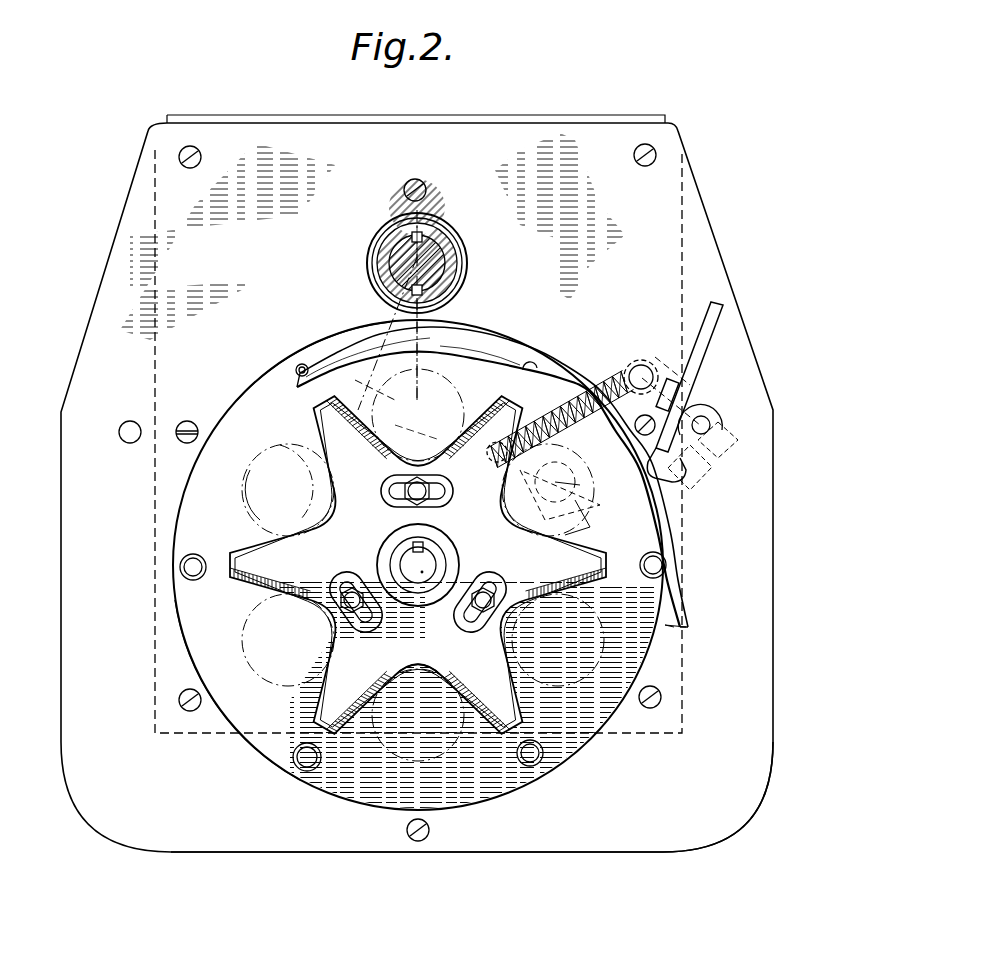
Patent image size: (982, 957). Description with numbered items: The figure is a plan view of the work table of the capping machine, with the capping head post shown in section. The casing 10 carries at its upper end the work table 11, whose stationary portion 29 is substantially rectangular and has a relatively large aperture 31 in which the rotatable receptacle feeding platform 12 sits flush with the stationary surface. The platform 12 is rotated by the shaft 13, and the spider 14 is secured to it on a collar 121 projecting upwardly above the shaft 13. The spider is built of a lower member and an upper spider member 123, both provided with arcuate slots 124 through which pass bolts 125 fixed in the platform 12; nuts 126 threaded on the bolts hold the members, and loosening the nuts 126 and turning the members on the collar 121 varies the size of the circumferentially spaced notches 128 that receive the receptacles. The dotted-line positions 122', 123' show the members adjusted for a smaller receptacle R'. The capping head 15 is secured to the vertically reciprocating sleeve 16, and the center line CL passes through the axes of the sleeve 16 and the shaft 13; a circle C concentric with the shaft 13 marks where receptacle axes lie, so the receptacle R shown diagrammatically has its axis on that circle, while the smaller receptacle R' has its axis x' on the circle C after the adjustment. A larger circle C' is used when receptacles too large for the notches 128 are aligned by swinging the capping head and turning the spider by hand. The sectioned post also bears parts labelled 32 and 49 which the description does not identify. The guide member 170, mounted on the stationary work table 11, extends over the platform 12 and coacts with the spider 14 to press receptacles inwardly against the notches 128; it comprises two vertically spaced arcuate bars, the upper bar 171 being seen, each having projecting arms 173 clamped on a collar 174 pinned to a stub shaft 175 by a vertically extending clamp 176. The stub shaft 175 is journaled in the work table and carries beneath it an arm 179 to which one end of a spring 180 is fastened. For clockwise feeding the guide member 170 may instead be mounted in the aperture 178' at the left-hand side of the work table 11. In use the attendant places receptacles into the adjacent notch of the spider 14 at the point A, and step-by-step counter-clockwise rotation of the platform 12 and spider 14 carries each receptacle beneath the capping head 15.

The casing 10 is at (686, 724).
The work table 11 is at (565, 834).
The stationary portion of the work table 29 is at (668, 830).
The aperture 178' is at (123, 451).
The receptacle feeding platform 12 is at (336, 785).
The capping head 15 is at (318, 350).
The aperture 31 is at (258, 748).
The notches 128 is at (545, 690).
The dotted-line position of lower spider member 122' is at (560, 481).
The dotted-line position of upper spider member 123' is at (606, 521).
The spider 14 is at (455, 455).
The shaft 13 is at (400, 560).
The collar 121 is at (418, 583).
The upper spider member 123 is at (418, 658).
The bolts 125 is at (392, 494).
The arcuate slots 124 is at (440, 494).
The nuts 126 is at (488, 578).
The guide member 170 is at (477, 359).
The upper arcuate bar 171 is at (530, 370).
The spring 180 is at (612, 385).
The arm 179 is at (640, 363).
The projecting arms 173 is at (722, 322).
The clamp 176 is at (690, 392).
The collar 174 is at (706, 420).
The stub shaft 175 is at (712, 432).
The sleeve 16 is at (440, 225).
The shaft 49 is at (405, 225).
The bearing ring 32 is at (372, 251).
The center line CL is at (422, 350).
The receptacle R is at (480, 370).
The smaller receptacle R' is at (619, 492).
The circle C is at (276, 495).
The larger circle C' is at (280, 470).
The axis of smaller receptacle x' is at (486, 448).
The point A is at (652, 645).